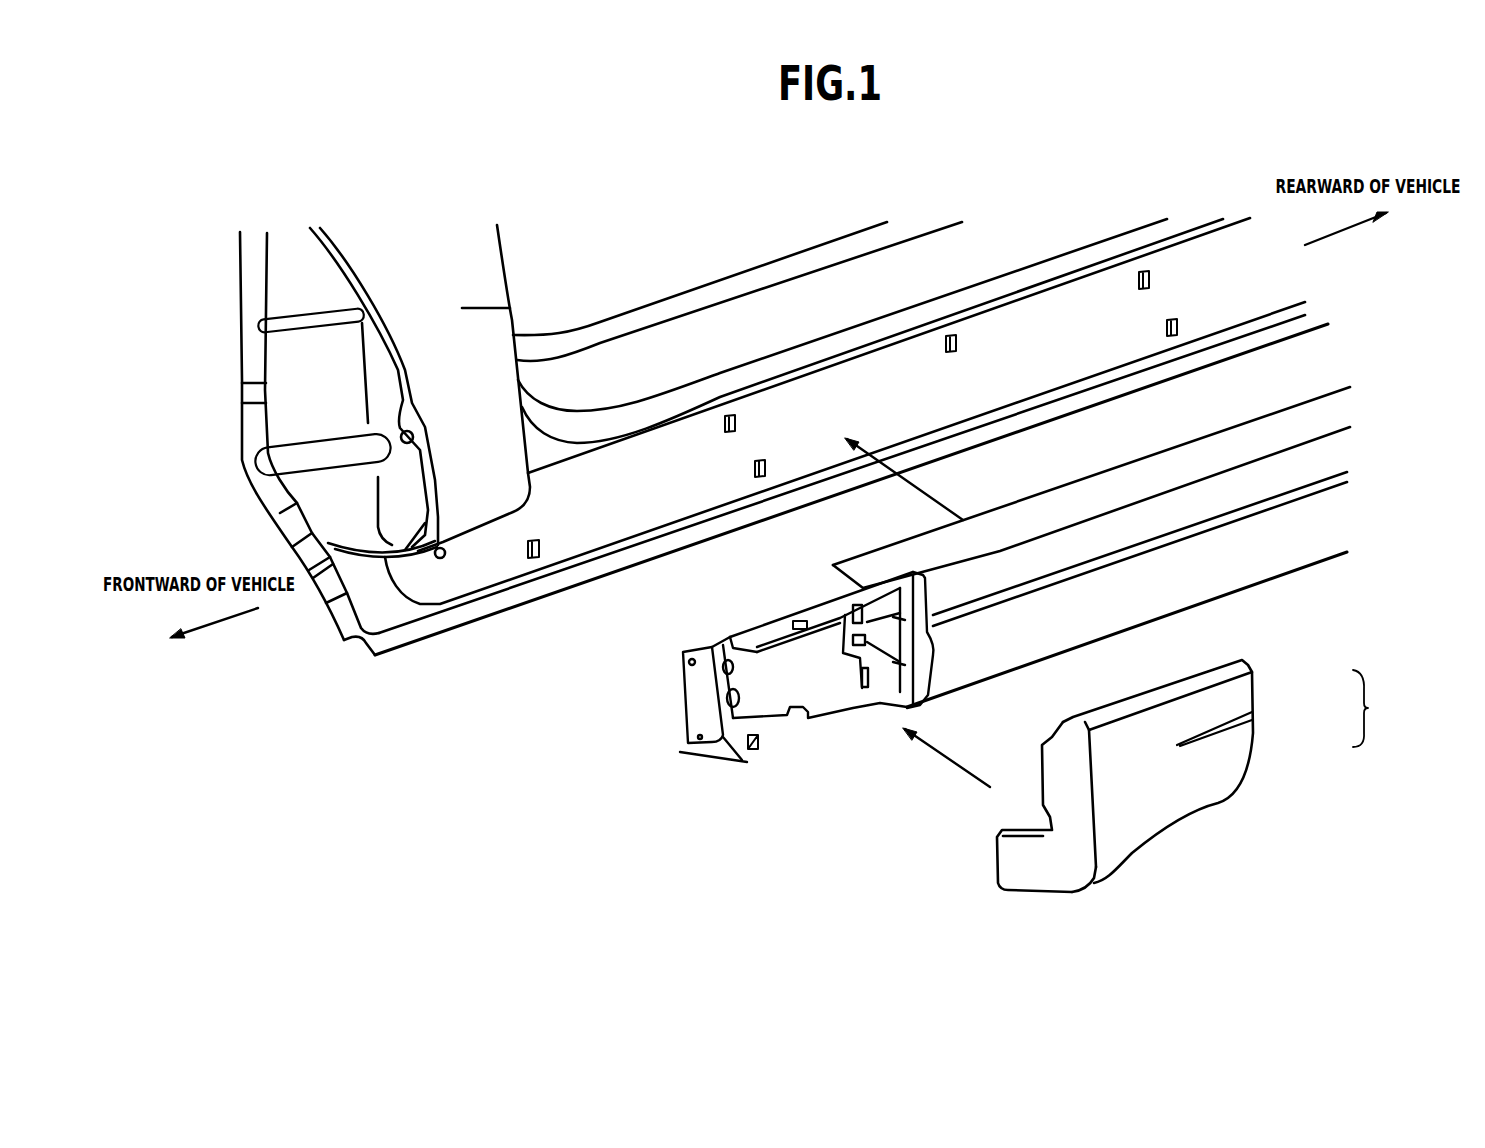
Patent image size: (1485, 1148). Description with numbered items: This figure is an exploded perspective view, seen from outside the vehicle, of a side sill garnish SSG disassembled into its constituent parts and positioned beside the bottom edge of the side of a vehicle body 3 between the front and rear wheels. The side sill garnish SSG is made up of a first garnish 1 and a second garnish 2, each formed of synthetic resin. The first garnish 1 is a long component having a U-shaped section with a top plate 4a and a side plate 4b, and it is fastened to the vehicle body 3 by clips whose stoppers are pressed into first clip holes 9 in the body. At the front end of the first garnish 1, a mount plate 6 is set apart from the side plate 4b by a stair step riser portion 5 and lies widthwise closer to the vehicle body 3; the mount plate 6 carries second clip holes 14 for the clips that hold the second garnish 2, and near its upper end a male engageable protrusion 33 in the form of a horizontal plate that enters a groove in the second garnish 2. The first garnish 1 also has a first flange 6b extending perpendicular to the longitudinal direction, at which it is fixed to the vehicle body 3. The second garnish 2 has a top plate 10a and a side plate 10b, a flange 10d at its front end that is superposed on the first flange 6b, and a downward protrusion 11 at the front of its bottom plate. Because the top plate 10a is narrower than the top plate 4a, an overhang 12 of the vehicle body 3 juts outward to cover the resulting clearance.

The first garnish 1 is at (1273, 542).
The second garnish 2 is at (1233, 742).
The vehicle body 3 is at (850, 397).
The top plate 4a is at (1300, 425).
The side plate 4b is at (1323, 517).
The stair step riser portion 5 is at (920, 623).
The mount plate 6 is at (820, 682).
The first flange 6b is at (700, 700).
The first clip hole 9 is at (530, 550).
The top plate 10a is at (1203, 677).
The side plate 10b is at (1145, 783).
The flange 10d is at (1035, 863).
The protrusion 11 is at (1098, 868).
The overhang 12 is at (513, 310).
The second clip hole 14 is at (753, 752).
The male engageable protrusion 33 is at (802, 618).
The side sill garnish SSG is at (1394, 708).